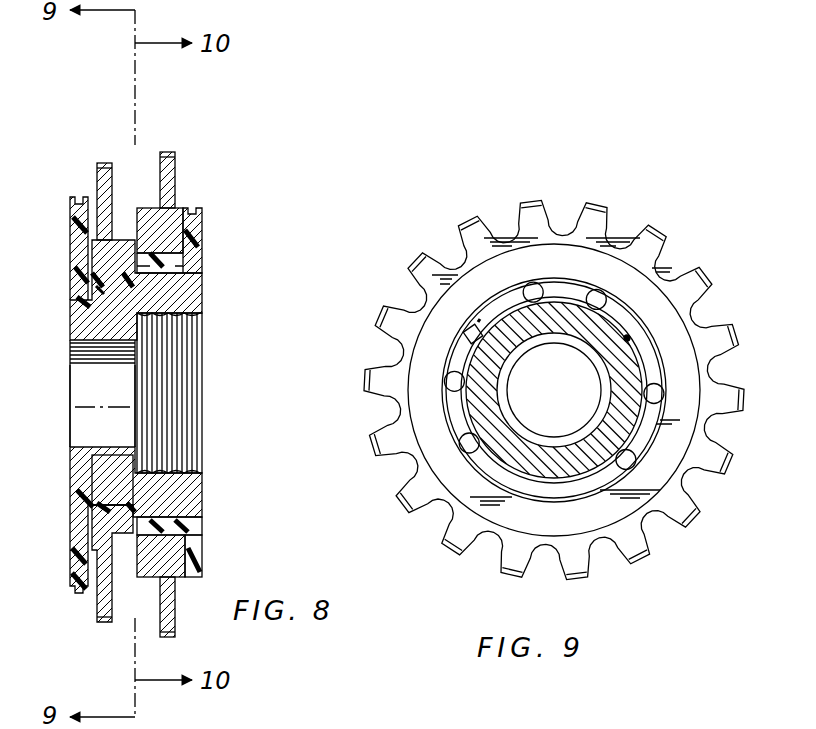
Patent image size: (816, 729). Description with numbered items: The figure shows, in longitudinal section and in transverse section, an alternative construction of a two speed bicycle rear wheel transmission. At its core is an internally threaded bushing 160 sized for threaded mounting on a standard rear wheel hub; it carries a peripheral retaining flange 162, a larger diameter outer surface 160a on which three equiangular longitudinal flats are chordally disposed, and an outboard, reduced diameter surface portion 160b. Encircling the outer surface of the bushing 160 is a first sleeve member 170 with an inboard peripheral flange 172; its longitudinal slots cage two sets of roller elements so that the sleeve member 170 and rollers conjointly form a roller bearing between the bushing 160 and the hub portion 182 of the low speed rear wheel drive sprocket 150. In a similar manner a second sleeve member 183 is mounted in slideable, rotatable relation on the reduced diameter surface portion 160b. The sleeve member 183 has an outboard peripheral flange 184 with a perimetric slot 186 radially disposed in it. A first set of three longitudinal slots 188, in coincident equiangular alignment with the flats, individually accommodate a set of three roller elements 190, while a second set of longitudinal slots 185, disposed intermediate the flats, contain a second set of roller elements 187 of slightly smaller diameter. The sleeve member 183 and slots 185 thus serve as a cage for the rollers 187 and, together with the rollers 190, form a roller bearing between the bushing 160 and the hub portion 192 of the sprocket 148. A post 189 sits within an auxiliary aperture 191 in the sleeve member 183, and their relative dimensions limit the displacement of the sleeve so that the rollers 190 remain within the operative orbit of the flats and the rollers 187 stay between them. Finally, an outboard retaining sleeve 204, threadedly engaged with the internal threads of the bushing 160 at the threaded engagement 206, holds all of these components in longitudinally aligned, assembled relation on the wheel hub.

In FIG. 8, the low speed rear wheel drive sprocket 150 is at (168, 176).
In FIG. 8, the perimetric slot 186 is at (80, 205).
In FIG. 8, the outboard peripheral flange 184 is at (73, 222).
In FIG. 8, the hub portion 182 is at (155, 226).
In FIG. 8, the peripheral retaining flange 162 is at (197, 264).
In FIG. 8, the internally threaded bushing 160 is at (196, 300).
In FIG. 8, the reduced diameter surface portion 160b is at (98, 293).
In FIG. 9, the reduced diameter surface portion 160b is at (628, 338).
In FIG. 8, the outboard retaining sleeve 204 is at (76, 333).
In FIG. 9, the outboard retaining sleeve 204 is at (587, 428).
In FIG. 8, the threaded engagement 206 is at (118, 352).
In FIG. 8, the larger diameter outer surface 160a is at (160, 496).
In FIG. 8, the second sleeve member 183 is at (92, 505).
In FIG. 8, the first sleeve member 170 is at (188, 527).
In FIG. 8, the inboard peripheral flange 172 is at (196, 575).
In FIG. 9, the sprocket 148 is at (650, 233).
In FIG. 9, the hub portion 192 is at (462, 262).
In FIG. 9, the second set of longitudinal slots 185 is at (653, 268).
In FIG. 9, the second set of roller elements 187 is at (597, 290).
In FIG. 9, the set of three roller elements 190 is at (533, 283).
In FIG. 9, the first set of three longitudinal slots 188 is at (597, 290).
In FIG. 9, the auxiliary aperture 191 is at (460, 342).
In FIG. 9, the post 189 is at (466, 318).